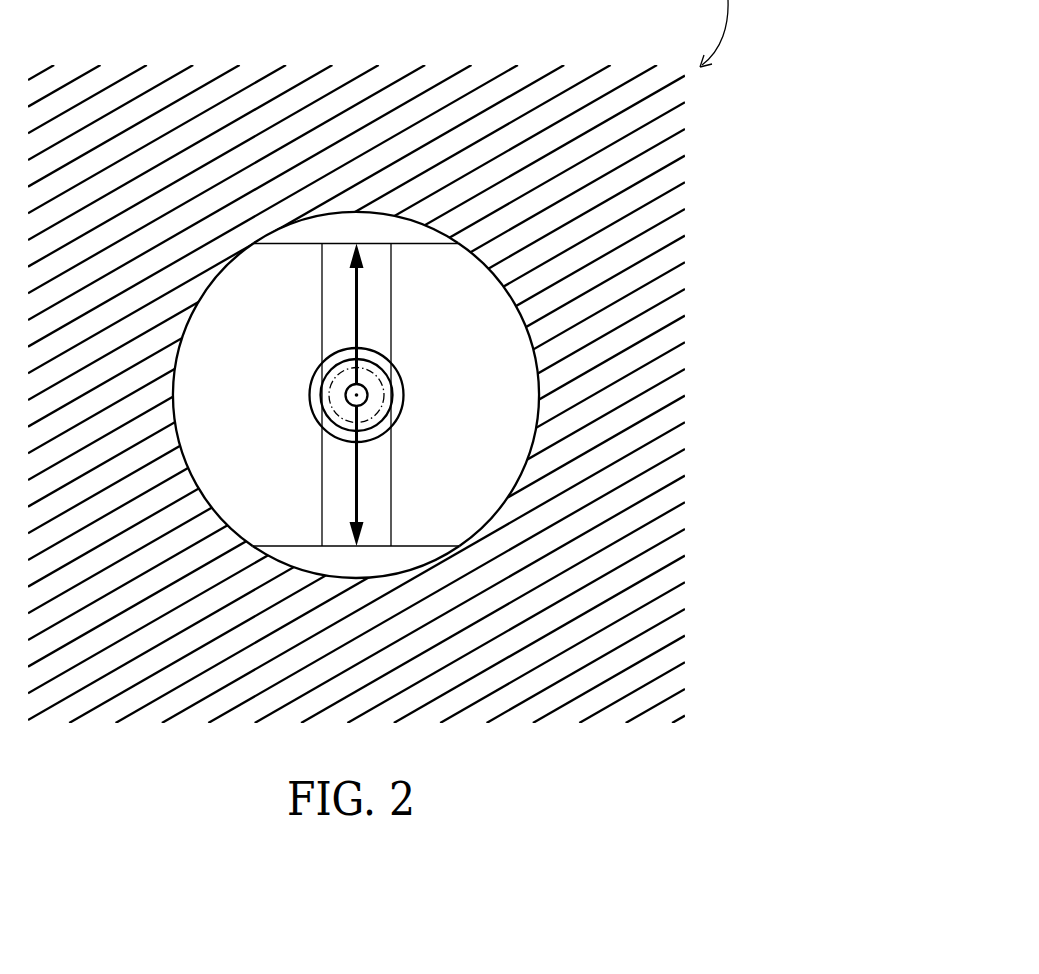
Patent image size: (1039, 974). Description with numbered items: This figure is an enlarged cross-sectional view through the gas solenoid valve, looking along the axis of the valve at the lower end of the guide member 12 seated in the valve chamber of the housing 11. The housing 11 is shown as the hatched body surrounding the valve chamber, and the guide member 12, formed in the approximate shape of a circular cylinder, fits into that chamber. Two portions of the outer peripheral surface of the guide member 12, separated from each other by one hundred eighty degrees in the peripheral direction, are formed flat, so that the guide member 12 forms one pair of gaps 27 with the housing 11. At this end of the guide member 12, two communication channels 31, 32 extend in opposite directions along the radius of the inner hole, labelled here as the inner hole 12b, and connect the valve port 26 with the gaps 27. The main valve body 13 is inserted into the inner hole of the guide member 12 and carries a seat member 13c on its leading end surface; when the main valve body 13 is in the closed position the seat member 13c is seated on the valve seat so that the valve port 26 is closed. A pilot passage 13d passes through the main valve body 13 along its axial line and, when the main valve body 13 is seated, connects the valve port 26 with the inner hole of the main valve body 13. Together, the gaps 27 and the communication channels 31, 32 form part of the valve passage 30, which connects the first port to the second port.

The housing 11 is at (668, 167).
The guide member 12 is at (489, 288).
The through hole 12b is at (314, 380).
The main valve body 13 is at (380, 383).
The seat member 13c is at (380, 364).
The pilot passage 13d is at (346, 423).
The valve port 26 is at (374, 405).
The gaps 27 is at (338, 213).
The valve passage 30 is at (377, 243).
The communication channel 31 is at (322, 284).
The communication channel 32 is at (385, 507).